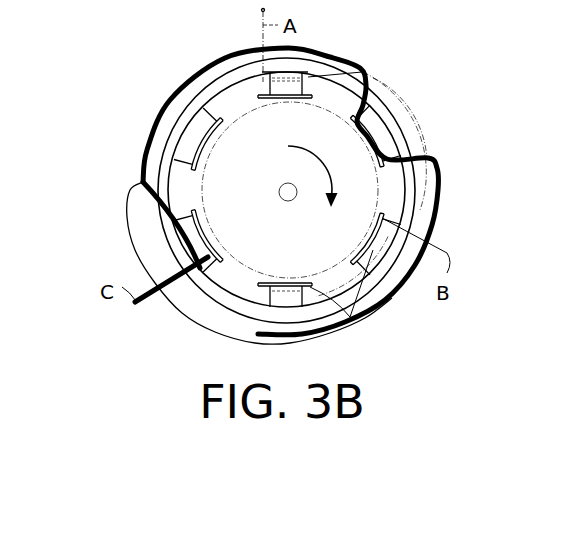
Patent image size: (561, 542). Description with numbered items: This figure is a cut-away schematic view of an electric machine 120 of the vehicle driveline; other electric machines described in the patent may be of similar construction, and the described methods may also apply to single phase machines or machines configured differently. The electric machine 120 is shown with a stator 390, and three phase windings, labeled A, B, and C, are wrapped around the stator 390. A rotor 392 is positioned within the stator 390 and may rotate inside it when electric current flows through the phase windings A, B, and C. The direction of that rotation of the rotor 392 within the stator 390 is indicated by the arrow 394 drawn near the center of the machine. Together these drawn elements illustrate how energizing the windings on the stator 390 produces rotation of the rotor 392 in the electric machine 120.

The electric machine 120 is at (110, 66).
The stator 390 is at (392, 125).
The rotor 392 is at (368, 188).
The arrow 394 is at (314, 157).